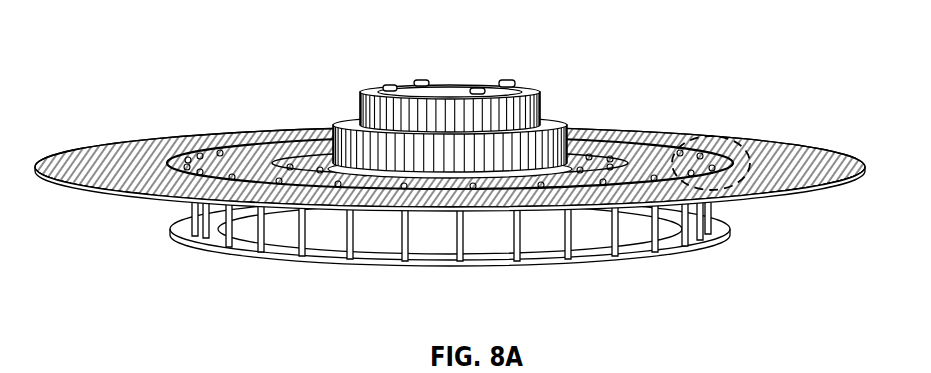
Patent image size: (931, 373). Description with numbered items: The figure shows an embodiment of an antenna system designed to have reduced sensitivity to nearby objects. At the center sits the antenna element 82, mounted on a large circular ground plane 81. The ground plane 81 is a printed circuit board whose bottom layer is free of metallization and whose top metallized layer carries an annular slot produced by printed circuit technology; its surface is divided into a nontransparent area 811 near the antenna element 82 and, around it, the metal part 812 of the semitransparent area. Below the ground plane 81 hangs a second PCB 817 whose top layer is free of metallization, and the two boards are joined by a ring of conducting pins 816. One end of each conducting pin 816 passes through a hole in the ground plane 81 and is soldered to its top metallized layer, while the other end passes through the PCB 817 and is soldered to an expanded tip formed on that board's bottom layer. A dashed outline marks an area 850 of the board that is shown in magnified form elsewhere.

The ground plane 81 is at (290, 132).
The antenna element 82 is at (390, 86).
The nontransparent area of ground plane 811 is at (628, 160).
The metal part of the semitransparent area of ground plane 812 is at (767, 162).
The conducting pin 816 is at (457, 250).
The PCB 817 is at (560, 264).
The area of the PCB 850 is at (698, 188).